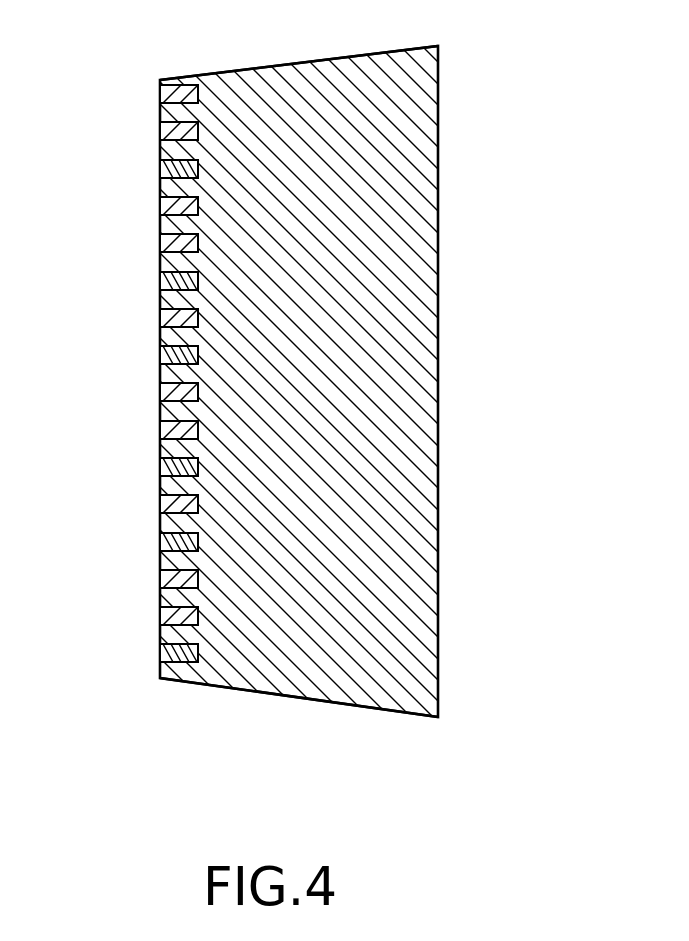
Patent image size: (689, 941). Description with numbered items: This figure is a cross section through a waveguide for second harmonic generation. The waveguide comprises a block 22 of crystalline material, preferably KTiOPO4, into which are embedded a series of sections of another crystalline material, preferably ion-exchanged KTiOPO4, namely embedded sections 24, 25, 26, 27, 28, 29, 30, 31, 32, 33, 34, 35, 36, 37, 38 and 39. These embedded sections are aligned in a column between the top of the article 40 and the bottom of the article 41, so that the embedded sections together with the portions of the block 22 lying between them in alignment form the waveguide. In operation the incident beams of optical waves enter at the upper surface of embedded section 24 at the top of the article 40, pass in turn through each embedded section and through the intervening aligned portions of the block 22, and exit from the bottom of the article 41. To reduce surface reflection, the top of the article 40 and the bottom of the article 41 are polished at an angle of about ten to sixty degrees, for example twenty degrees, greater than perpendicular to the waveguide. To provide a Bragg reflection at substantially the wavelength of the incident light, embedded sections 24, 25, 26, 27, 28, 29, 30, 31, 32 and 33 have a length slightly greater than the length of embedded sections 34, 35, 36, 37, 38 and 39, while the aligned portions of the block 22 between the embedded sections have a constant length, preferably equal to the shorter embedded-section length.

The block 22 is at (400, 282).
The embedded section 24 is at (160, 85).
The embedded section 25 is at (160, 122).
The embedded section 26 is at (160, 197).
The embedded section 27 is at (160, 234).
The embedded section 28 is at (160, 309).
The embedded section 29 is at (160, 383).
The embedded section 30 is at (160, 421).
The embedded section 31 is at (160, 495).
The embedded section 32 is at (160, 570).
The embedded section 33 is at (160, 607).
The embedded section 34 is at (160, 160).
The embedded section 35 is at (160, 272).
The embedded section 36 is at (160, 346).
The embedded section 37 is at (160, 458).
The embedded section 38 is at (160, 533).
The embedded section 39 is at (160, 644).
The top of the article 40 is at (350, 57).
The bottom of the article 41 is at (330, 702).